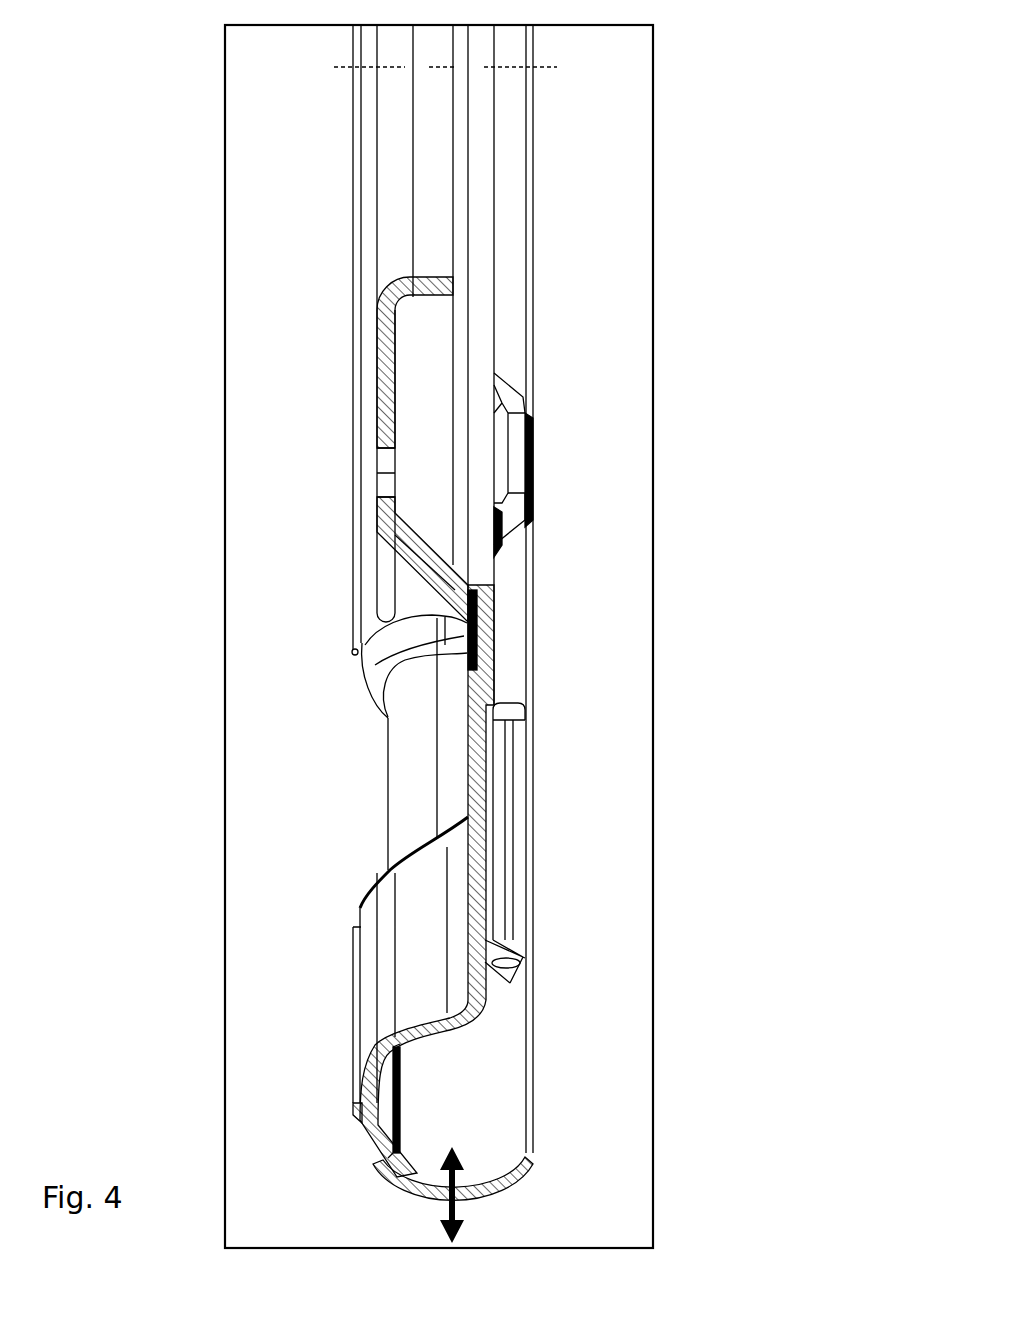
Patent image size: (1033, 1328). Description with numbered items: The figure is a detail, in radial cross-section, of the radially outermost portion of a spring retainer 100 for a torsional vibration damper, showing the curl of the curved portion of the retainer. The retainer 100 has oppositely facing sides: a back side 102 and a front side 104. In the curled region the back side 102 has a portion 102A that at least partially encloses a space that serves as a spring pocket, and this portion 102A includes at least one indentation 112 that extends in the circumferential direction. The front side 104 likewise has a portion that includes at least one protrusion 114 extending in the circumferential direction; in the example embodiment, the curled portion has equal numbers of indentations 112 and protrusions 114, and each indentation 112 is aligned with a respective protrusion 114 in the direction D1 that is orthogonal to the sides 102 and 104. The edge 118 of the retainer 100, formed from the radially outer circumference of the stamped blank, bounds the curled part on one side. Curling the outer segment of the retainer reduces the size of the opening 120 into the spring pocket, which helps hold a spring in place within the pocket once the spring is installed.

The spring retainer 100 is at (704, 48).
The back side 102 is at (500, 622).
The portion of back side 102A is at (463, 1082).
The front side 104 is at (374, 377).
The indentation 112 is at (400, 1117).
The protrusion 114 is at (387, 1177).
The edge 118 is at (533, 1153).
The opening 120 is at (481, 1054).
The direction orthogonal to sides D1 is at (457, 1210).